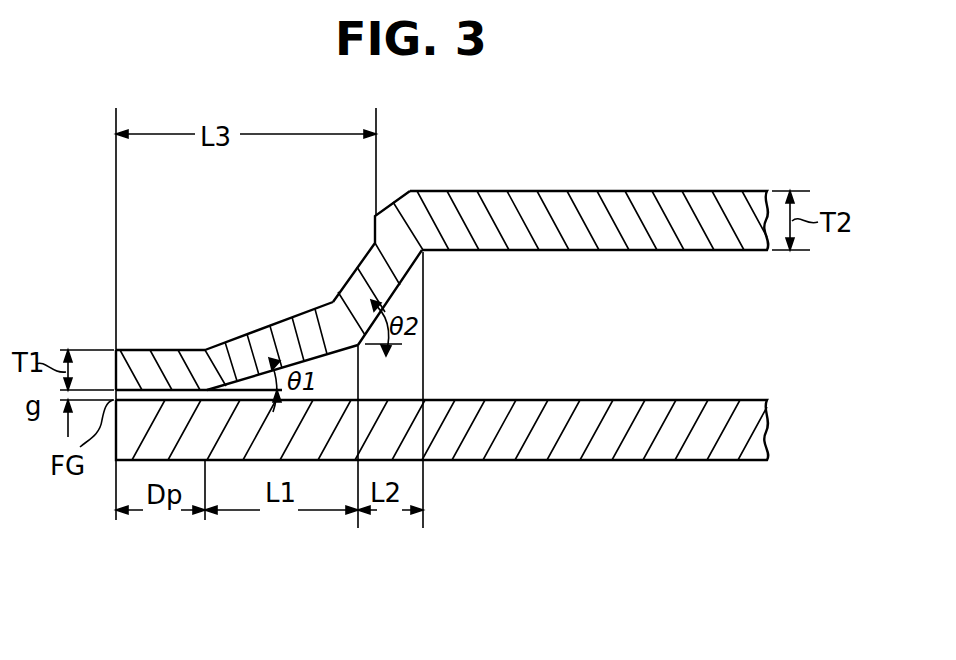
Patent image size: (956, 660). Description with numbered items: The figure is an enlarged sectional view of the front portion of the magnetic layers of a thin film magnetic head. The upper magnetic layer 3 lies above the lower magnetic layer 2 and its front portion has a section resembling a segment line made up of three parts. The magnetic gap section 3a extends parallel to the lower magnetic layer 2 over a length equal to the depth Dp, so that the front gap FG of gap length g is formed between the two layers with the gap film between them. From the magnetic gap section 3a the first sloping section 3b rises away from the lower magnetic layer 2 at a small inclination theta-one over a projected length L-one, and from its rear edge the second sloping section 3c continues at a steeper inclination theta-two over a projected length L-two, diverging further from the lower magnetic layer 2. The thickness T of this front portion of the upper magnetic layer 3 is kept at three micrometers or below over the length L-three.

The upper magnetic layer 3 is at (442, 261).
The magnetic gap section 3a is at (142, 358).
The first sloping section 3b is at (288, 330).
The second sloping section 3c is at (372, 262).
The lower magnetic layer 2 is at (572, 450).